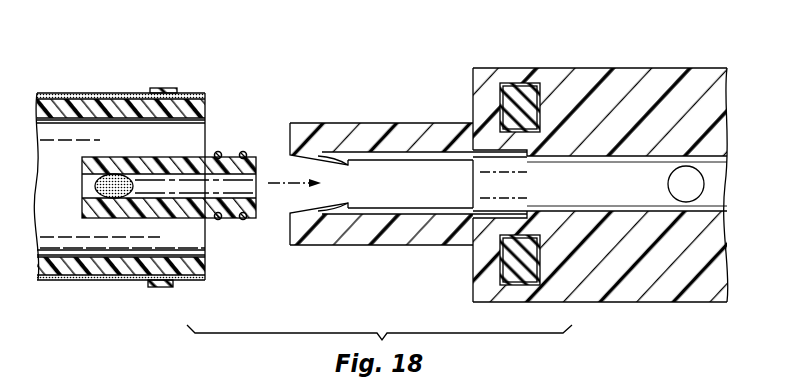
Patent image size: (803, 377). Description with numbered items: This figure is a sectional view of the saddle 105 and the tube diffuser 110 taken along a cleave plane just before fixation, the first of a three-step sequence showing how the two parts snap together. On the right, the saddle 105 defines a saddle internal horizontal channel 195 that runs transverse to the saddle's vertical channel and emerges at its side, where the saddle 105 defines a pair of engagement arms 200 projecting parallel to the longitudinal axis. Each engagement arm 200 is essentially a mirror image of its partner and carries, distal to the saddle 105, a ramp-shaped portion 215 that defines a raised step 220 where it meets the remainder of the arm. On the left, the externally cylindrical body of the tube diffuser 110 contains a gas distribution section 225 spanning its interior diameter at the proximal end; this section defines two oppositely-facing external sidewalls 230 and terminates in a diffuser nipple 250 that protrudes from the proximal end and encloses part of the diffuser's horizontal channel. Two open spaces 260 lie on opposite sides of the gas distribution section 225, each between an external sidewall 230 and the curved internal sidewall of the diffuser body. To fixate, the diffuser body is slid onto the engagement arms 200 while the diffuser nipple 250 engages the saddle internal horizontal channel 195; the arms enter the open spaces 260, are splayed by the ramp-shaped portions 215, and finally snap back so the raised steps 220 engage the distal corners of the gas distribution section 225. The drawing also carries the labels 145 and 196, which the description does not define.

The saddle 105 is at (626, 65).
The tube diffuser 110 is at (54, 88).
The fastener pins 145 is at (244, 220).
The saddle internal horizontal channel 195 is at (560, 198).
The partial numeral (cut off) 196 is at (629, 370).
The engagement arms 200 is at (391, 121).
The ramp-shaped portion 215 is at (308, 216).
The raised step 220 is at (355, 203).
The gas distribution section 225 is at (122, 152).
The oppositely-facing external sidewalls 230 is at (108, 219).
The diffuser nipple 250 is at (237, 141).
The open spaces 260 is at (190, 137).